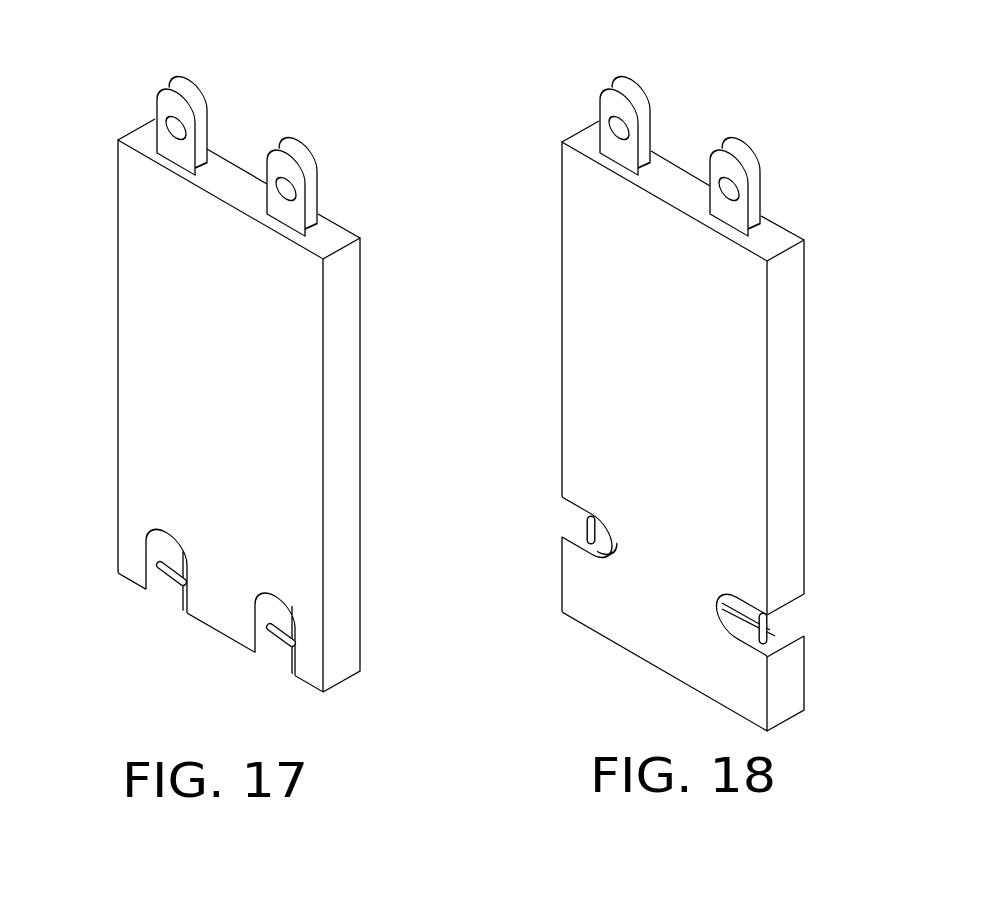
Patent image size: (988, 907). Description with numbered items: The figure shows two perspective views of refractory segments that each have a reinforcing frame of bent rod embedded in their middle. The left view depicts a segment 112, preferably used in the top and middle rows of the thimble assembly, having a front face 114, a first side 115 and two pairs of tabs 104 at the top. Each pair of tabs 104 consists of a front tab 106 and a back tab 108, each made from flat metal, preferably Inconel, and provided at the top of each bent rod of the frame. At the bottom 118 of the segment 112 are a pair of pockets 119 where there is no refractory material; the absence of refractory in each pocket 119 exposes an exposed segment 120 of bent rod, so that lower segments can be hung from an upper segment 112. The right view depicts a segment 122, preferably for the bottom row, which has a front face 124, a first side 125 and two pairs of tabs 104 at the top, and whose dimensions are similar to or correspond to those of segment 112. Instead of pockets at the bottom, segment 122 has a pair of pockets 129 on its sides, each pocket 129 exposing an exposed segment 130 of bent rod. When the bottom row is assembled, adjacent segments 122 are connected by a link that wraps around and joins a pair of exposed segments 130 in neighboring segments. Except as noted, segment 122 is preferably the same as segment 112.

In FIG. 17, the pair of tabs 104 is at (243, 388).
In FIG. 18, the pair of tabs 104 is at (675, 373).
In FIG. 17, the front tab 106 is at (162, 110).
In FIG. 18, the front tab 106 is at (607, 110).
In FIG. 17, the back tab 108 is at (187, 86).
In FIG. 18, the back tab 108 is at (632, 86).
In FIG. 17, the segment 112 is at (259, 440).
In FIG. 17, the front face 114 is at (259, 450).
In FIG. 17, the first side 115 is at (345, 310).
In FIG. 17, the bottom 118 is at (228, 645).
In FIG. 17, the pocket 119 is at (160, 595).
In FIG. 17, the exposed segment 120 is at (170, 583).
In FIG. 18, the segment 122 is at (675, 426).
In FIG. 18, the front face 124 is at (675, 436).
In FIG. 18, the first side 125 is at (788, 310).
In FIG. 18, the pocket 129 is at (557, 527).
In FIG. 18, the exposed segment 130 is at (585, 520).